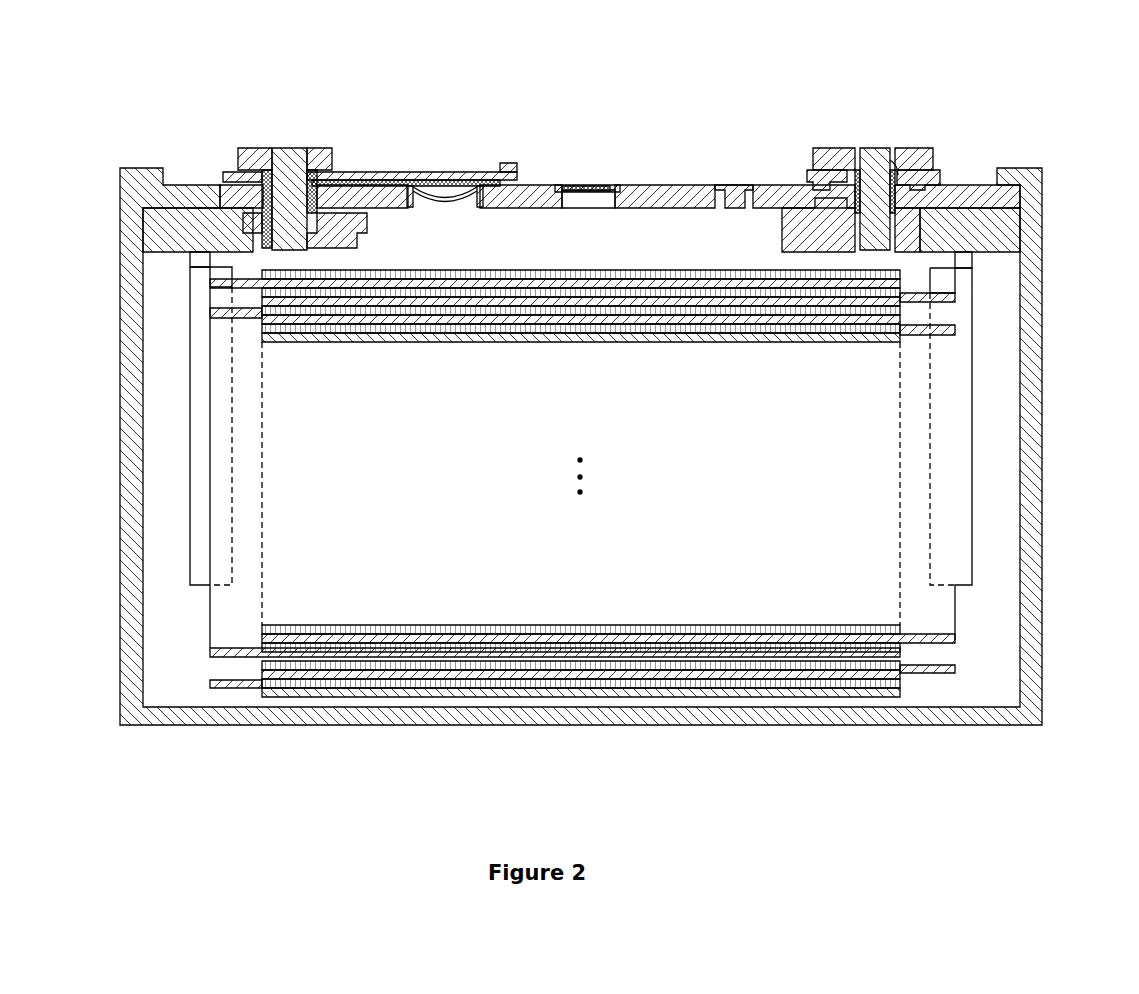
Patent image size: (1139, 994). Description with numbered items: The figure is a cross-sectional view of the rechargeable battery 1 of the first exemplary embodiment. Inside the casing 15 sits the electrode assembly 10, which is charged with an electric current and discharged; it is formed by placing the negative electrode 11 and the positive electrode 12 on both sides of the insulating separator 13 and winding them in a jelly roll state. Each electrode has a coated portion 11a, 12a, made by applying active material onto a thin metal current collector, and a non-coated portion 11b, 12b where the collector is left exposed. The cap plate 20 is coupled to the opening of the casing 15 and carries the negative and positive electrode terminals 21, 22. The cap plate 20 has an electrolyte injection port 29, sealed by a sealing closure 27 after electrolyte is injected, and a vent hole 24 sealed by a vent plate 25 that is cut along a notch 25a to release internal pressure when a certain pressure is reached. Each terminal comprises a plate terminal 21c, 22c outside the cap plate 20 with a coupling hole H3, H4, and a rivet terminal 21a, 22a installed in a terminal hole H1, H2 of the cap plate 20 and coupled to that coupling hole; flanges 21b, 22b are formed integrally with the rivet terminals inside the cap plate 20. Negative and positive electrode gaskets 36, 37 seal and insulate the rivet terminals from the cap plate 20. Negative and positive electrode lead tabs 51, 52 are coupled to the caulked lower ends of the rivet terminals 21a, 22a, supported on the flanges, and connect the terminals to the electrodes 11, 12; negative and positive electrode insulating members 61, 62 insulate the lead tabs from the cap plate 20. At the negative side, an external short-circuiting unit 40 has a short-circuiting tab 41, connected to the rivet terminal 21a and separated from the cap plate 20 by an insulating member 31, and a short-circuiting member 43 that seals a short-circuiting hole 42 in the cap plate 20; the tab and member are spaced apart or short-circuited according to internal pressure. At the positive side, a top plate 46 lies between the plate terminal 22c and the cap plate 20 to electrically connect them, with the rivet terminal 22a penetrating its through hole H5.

The rechargeable battery 1 is at (606, 96).
The electrode assembly 10 is at (586, 540).
The negative electrode 11 is at (555, 544).
The coated portion 11a is at (368, 658).
The non-coated portion 11b is at (236, 540).
The positive electrode 12 is at (612, 551).
The coated portion 12a is at (820, 680).
The non-coated portion 12b is at (931, 532).
The separator 13 is at (597, 692).
The casing 15 is at (1035, 380).
The cap plate 20 is at (660, 195).
The negative electrode terminal 21 is at (312, 244).
The rivet terminal 21a is at (290, 235).
The flange 21b is at (325, 222).
The plate terminal 21c is at (330, 155).
The positive electrode terminal 22 is at (918, 190).
The rivet terminal 22a is at (880, 248).
The flange 22b is at (832, 226).
The plate terminal 22c is at (915, 158).
The vent hole 24 is at (590, 205).
The vent plate 25 is at (612, 186).
The notch 25a is at (577, 186).
The sealing closure 27 is at (740, 198).
The electrolyte injection port 29 is at (733, 190).
The insulating member 31 is at (507, 163).
The negative electrode gasket 36 is at (245, 178).
The positive electrode gasket 37 is at (835, 177).
The external short-circuiting unit 40 is at (416, 168).
The short-circuiting tab 41 is at (388, 177).
The short-circuiting hole 42 is at (480, 205).
The short-circuiting member 43 is at (442, 200).
The top plate 46 is at (940, 178).
The negative electrode lead tab 51 is at (190, 392).
The positive electrode lead tab 52 is at (972, 548).
The negative electrode insulating member 61 is at (160, 222).
The positive electrode insulating member 62 is at (1005, 232).
The terminal hole H1 is at (268, 192).
The terminal hole H2 is at (892, 185).
The coupling hole H3 is at (298, 168).
The coupling hole H4 is at (858, 180).
The through hole H5 is at (895, 168).